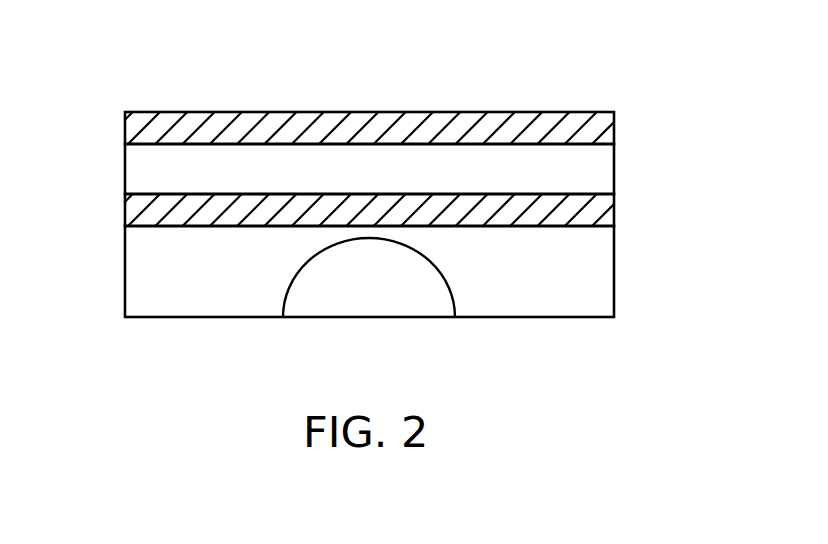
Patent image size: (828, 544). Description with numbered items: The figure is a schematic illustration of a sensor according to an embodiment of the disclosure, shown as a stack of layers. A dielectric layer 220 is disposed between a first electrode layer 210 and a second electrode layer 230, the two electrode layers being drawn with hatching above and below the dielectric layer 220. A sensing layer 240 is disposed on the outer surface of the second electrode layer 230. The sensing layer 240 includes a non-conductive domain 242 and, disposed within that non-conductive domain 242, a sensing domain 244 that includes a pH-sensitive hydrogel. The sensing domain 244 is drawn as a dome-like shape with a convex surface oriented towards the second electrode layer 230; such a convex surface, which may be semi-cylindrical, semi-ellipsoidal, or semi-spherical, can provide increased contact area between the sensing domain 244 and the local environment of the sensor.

The first electrode layer 210 is at (614, 127).
The dielectric layer 220 is at (125, 170).
The second electrode layer 230 is at (614, 208).
The sensing layer 240 is at (125, 270).
The non-conductive domain 242 is at (238, 292).
The sensing domain 244 is at (394, 295).